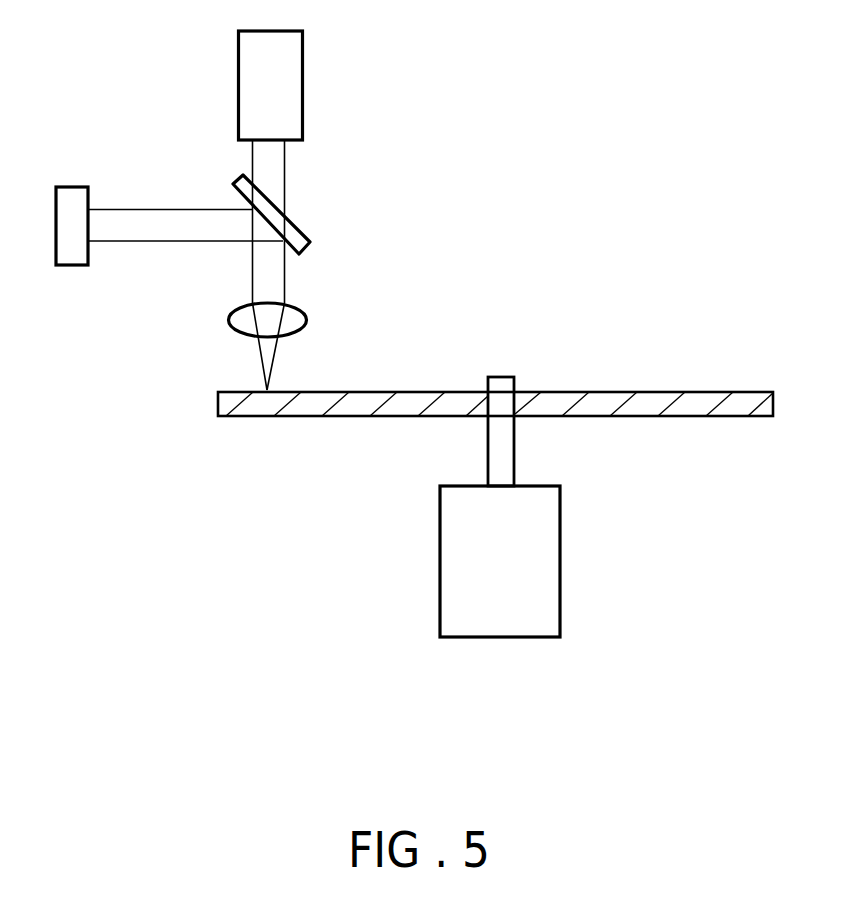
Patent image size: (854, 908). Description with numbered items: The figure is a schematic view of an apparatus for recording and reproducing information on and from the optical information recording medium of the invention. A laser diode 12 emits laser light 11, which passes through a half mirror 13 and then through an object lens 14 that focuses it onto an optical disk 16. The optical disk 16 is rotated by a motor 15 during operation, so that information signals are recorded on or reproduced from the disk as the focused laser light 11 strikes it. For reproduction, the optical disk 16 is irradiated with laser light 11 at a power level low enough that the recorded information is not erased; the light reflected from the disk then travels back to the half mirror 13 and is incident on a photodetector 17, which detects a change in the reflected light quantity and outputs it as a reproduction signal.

The laser light 11 is at (264, 360).
The laser diode 12 is at (302, 81).
The half mirror 13 is at (308, 229).
The object lens 14 is at (307, 318).
The motor 15 is at (560, 566).
The optical disk 16 is at (617, 394).
The photodetector 17 is at (74, 187).